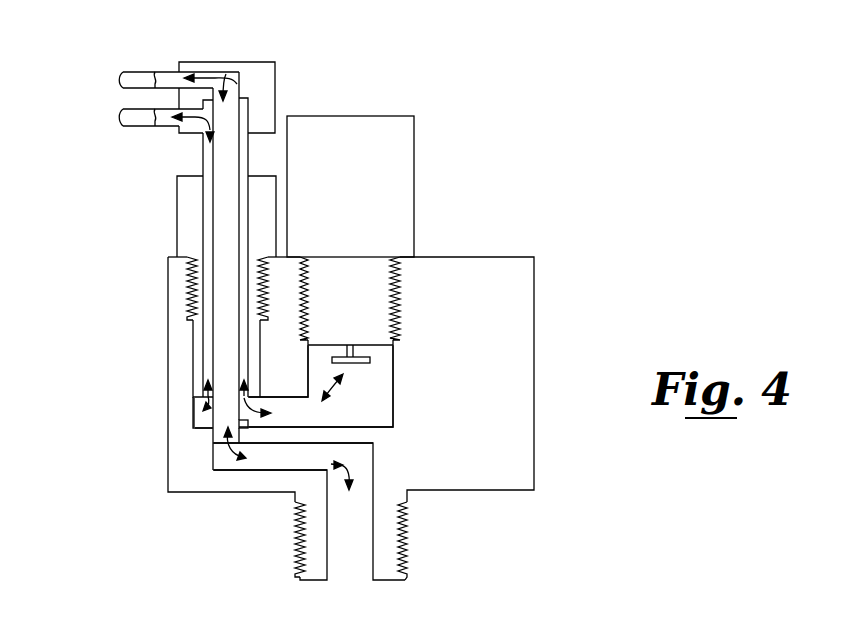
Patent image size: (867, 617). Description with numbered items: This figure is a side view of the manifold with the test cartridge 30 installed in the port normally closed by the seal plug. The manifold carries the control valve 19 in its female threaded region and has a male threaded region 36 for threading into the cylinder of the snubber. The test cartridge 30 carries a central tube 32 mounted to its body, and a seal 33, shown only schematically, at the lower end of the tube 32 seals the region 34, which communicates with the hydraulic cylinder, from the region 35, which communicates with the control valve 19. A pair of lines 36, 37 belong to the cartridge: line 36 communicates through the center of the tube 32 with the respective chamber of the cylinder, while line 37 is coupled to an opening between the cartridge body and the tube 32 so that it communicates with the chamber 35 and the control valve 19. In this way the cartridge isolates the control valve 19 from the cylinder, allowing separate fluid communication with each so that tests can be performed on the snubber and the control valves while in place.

The control valve 19 is at (414, 150).
The test cartridge 30 is at (177, 212).
The central tube 32 is at (220, 412).
The seal 33 is at (210, 422).
The region 34 is at (275, 470).
The region 35 is at (367, 388).
The line 36 is at (135, 72).
The line 37 is at (128, 110).